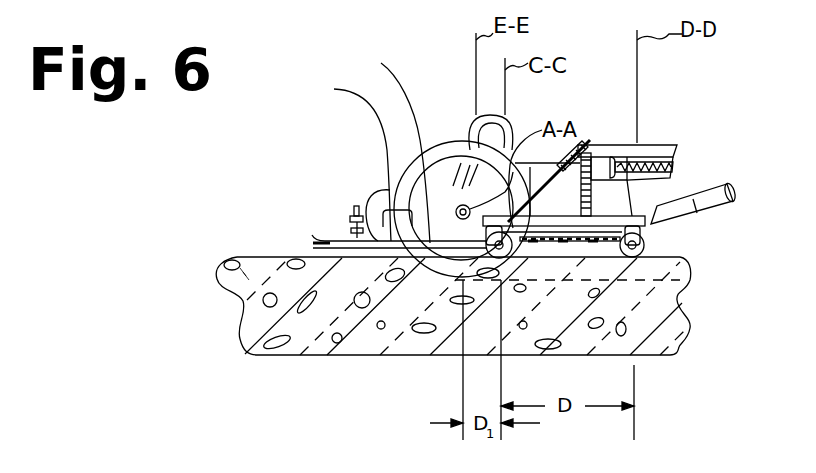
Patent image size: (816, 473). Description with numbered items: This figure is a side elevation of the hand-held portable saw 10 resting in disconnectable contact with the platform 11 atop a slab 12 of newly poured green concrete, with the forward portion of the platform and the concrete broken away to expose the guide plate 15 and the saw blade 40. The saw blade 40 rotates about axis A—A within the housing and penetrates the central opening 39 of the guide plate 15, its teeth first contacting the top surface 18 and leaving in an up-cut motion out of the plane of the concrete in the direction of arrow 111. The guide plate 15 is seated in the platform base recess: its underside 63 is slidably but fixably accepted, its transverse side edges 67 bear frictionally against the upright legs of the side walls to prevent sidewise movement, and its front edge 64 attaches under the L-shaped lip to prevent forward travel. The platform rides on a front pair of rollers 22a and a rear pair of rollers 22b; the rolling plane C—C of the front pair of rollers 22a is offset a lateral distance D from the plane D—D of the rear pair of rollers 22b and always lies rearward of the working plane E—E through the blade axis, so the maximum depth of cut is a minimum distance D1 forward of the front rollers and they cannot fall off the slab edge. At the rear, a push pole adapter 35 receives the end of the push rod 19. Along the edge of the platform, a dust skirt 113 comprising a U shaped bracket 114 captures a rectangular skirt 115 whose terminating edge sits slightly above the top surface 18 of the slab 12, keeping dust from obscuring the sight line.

The hand-held portable saw 10 is at (690, 187).
The platform 11 is at (663, 240).
The slab 12 is at (390, 293).
The guide plate 15 is at (328, 230).
The top surface 18 is at (240, 257).
The push rod 19 is at (703, 212).
The front pair of rollers 22a is at (588, 140).
The rear pair of rollers 22b is at (657, 247).
The push pole adapter 35 is at (650, 210).
The central opening 39 is at (350, 158).
The saw blade 40 is at (452, 168).
The underside 63 is at (318, 245).
The front edge 64 is at (312, 235).
The transverse side edges 67 is at (393, 146).
The arrow 111 is at (366, 147).
The dust skirt 113 is at (595, 250).
The U shaped bracket 114 is at (565, 250).
The skirt 115 is at (535, 250).